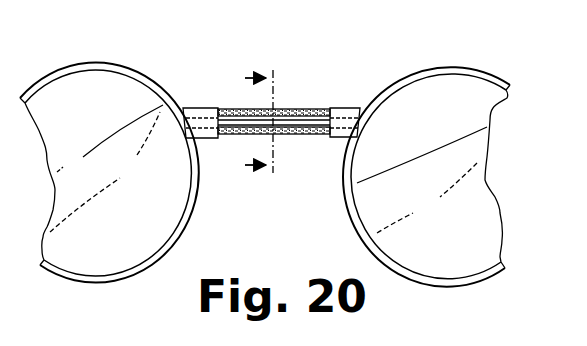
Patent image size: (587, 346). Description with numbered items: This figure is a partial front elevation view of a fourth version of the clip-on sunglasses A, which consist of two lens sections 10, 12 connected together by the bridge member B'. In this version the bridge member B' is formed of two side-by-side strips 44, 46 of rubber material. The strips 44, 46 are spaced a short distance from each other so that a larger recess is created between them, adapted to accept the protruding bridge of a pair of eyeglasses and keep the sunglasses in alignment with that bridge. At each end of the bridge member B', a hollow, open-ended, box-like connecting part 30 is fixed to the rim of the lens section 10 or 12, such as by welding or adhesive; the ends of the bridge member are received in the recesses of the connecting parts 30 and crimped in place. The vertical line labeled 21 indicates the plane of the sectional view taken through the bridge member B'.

The lens section 10 is at (145, 215).
The lens section 12 is at (437, 195).
The connecting part 30 is at (193, 108).
The strip 44 is at (222, 109).
The strip 46 is at (308, 135).
The section line 21- 21 is at (269, 126).
The clip-on sunglasses A is at (487, 54).
The bridge member B' is at (322, 73).